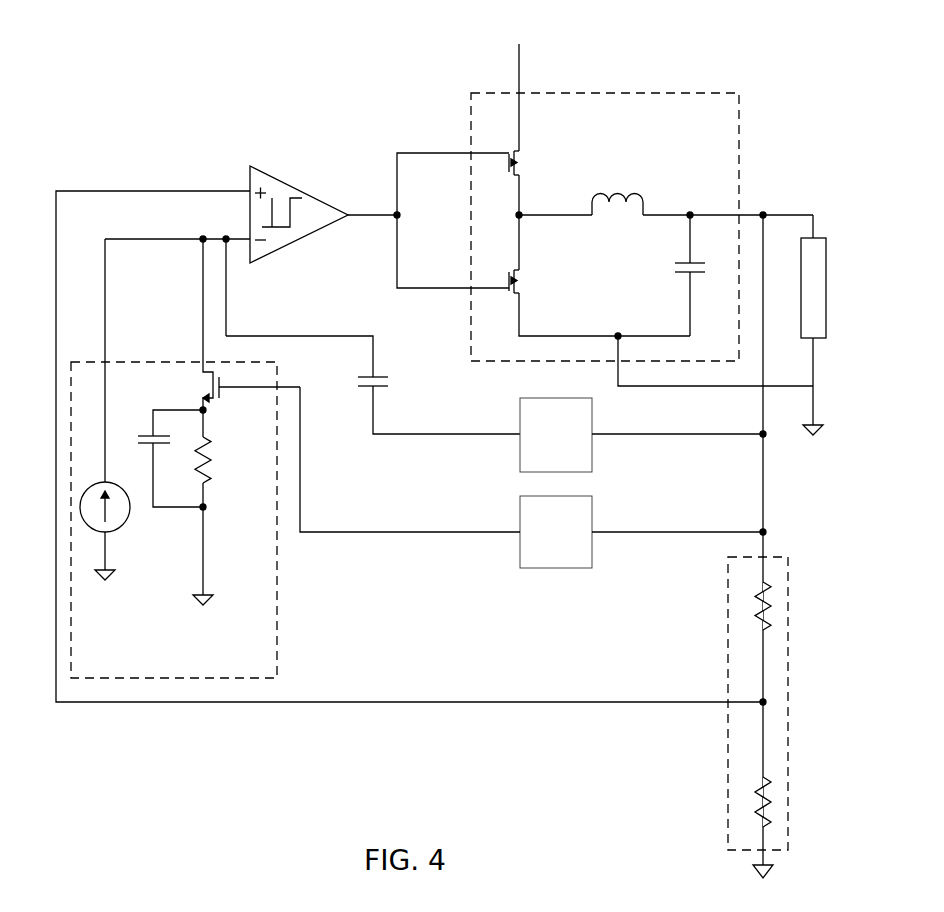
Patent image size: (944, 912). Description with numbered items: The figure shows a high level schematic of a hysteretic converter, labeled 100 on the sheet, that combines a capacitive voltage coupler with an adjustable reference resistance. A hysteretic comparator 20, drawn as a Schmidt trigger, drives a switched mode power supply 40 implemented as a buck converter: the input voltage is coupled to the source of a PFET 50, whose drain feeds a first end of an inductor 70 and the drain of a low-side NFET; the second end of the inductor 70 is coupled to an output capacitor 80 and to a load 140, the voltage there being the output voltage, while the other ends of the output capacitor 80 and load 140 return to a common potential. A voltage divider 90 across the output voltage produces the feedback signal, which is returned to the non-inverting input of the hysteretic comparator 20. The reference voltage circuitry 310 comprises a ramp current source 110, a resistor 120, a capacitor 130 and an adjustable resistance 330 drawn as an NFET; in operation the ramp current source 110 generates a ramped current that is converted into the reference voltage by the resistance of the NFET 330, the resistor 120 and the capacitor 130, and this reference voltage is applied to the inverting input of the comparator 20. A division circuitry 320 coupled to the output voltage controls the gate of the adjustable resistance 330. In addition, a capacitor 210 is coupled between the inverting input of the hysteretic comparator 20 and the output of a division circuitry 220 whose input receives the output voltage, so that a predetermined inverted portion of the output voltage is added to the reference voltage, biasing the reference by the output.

The reference voltage circuitry 100 is at (147, 50).
The hysteretic comparator 20 is at (300, 240).
The switched mode power supply 40 is at (739, 143).
The PFET 50 is at (520, 155).
The inductor 70 is at (643, 198).
The output capacitor 80 is at (690, 277).
The voltage divider 90 is at (788, 587).
The ramp current source 110 is at (128, 518).
The resistor 120 is at (212, 460).
The capacitor 130 is at (170, 440).
The load 140 is at (826, 288).
The capacitor 210 is at (383, 388).
The division circuitry 220 is at (520, 448).
The division circuitry 320 is at (558, 568).
The reference voltage circuitry 310 is at (277, 590).
The adjustable resistance 330 is at (205, 387).